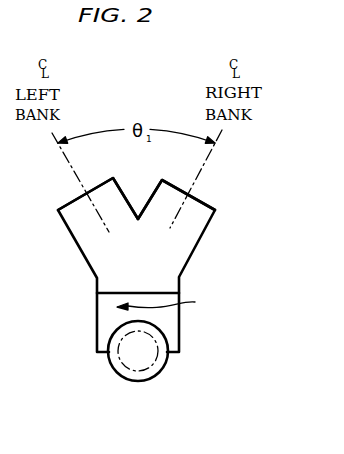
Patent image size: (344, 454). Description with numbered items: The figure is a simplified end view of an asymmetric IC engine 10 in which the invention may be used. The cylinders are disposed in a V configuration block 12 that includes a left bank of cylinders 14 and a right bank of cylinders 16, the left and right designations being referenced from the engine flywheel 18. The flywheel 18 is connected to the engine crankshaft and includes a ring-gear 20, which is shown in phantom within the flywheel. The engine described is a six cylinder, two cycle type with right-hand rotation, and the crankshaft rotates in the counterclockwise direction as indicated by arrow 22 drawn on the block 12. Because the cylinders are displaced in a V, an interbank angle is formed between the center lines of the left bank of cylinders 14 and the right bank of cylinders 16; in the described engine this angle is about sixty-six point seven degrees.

The asymmetric IC engine 10 is at (172, 72).
The V configuration block 12 is at (150, 273).
The left bank of cylinders 14 is at (65, 206).
The right bank of cylinders 16 is at (207, 204).
The engine flywheel 18 is at (115, 377).
The ring-gear 20 is at (148, 358).
The arrow 22 is at (163, 308).